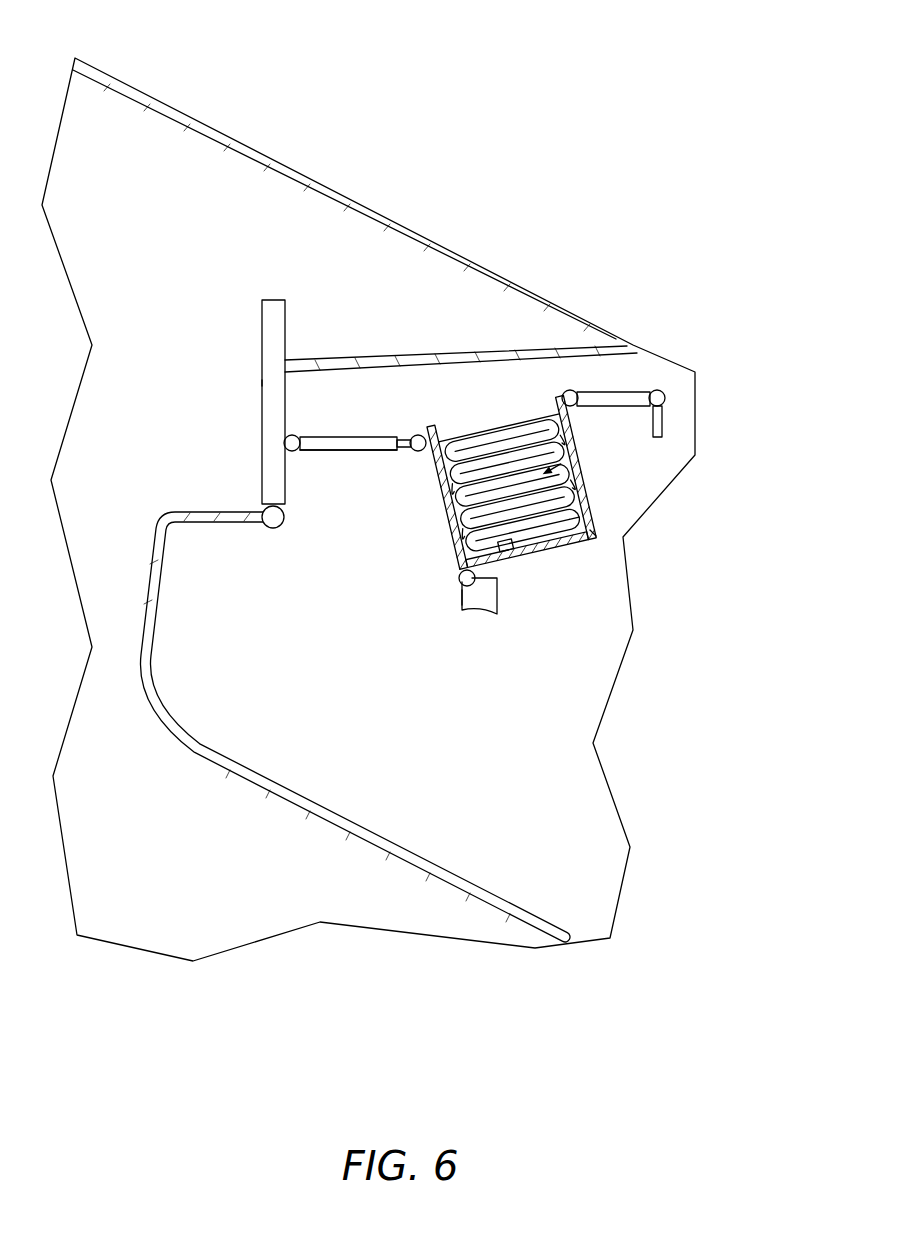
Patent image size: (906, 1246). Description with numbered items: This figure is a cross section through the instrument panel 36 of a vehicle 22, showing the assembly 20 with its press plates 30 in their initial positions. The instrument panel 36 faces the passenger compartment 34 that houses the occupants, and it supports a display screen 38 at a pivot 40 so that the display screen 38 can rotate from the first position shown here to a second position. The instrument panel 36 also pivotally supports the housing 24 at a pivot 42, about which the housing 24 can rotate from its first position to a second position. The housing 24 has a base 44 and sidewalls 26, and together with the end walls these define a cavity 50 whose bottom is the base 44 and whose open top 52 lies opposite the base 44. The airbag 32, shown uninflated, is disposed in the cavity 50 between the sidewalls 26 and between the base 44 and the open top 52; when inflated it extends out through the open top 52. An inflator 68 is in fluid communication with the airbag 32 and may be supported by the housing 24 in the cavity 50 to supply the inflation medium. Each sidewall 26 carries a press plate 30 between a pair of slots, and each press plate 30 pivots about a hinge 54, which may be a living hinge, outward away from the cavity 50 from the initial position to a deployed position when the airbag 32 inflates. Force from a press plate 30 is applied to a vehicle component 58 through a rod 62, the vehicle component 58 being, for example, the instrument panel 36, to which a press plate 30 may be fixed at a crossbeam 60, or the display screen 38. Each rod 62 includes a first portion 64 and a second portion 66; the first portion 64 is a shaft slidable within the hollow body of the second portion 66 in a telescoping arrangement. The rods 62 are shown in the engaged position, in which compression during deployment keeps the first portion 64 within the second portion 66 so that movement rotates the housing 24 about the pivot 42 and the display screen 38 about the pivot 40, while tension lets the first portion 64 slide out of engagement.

The assembly 20 is at (598, 580).
The vehicle 22 is at (257, 145).
The housing 24 is at (455, 555).
The sidewall 26 is at (447, 520).
The press plate 30 is at (438, 488).
The airbag 32 is at (500, 445).
The passenger compartment 34 is at (137, 222).
The instrument panel 36 is at (387, 358).
The display screen 38 is at (262, 438).
The pivot 40 is at (272, 529).
The pivot 42 is at (455, 582).
The base 44 is at (535, 552).
The cavity 50 is at (577, 465).
The open top 52 is at (522, 400).
The hinge 54 is at (460, 580).
The vehicle component 58 is at (262, 382).
The crossbeam 60 is at (460, 600).
The rod 62 is at (350, 437).
The first portion 64 is at (410, 440).
The second portion 66 is at (312, 452).
The inflator 68 is at (548, 538).